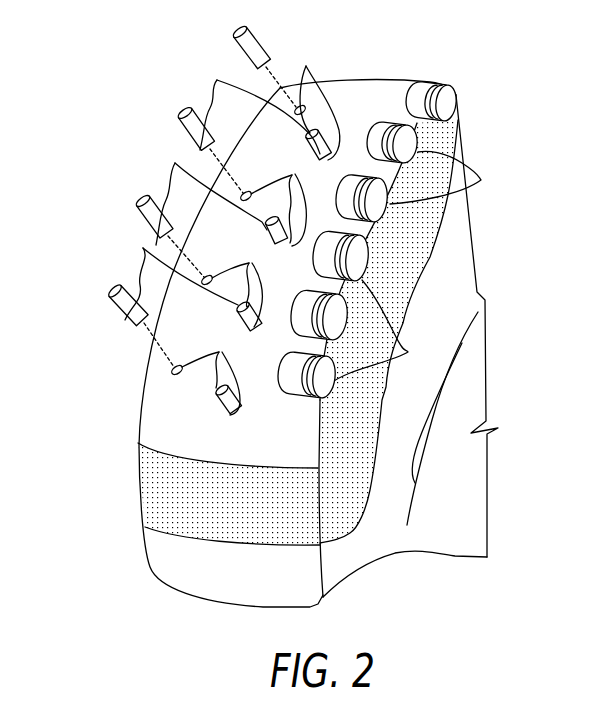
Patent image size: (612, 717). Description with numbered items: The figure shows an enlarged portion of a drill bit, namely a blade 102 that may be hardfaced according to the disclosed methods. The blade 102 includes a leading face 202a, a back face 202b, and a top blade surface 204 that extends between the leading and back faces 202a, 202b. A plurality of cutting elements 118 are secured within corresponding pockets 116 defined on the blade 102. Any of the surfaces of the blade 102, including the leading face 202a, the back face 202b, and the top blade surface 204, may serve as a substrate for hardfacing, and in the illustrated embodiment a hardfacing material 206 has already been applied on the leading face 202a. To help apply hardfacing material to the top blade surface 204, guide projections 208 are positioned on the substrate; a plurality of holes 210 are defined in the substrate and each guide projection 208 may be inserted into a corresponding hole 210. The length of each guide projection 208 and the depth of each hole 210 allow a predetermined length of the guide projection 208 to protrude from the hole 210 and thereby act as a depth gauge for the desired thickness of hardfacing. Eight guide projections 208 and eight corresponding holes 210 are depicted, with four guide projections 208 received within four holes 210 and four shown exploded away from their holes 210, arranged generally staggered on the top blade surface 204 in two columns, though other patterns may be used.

The blade 102 is at (506, 93).
The pockets 116 is at (421, 269).
The cutting elements 118 is at (367, 138).
The leading face 202a is at (458, 284).
The back face 202b is at (140, 430).
The top blade surface 204 is at (352, 78).
The hardfacing material 206 is at (428, 230).
The guide projections 208 is at (198, 435).
The holes 210 is at (255, 229).